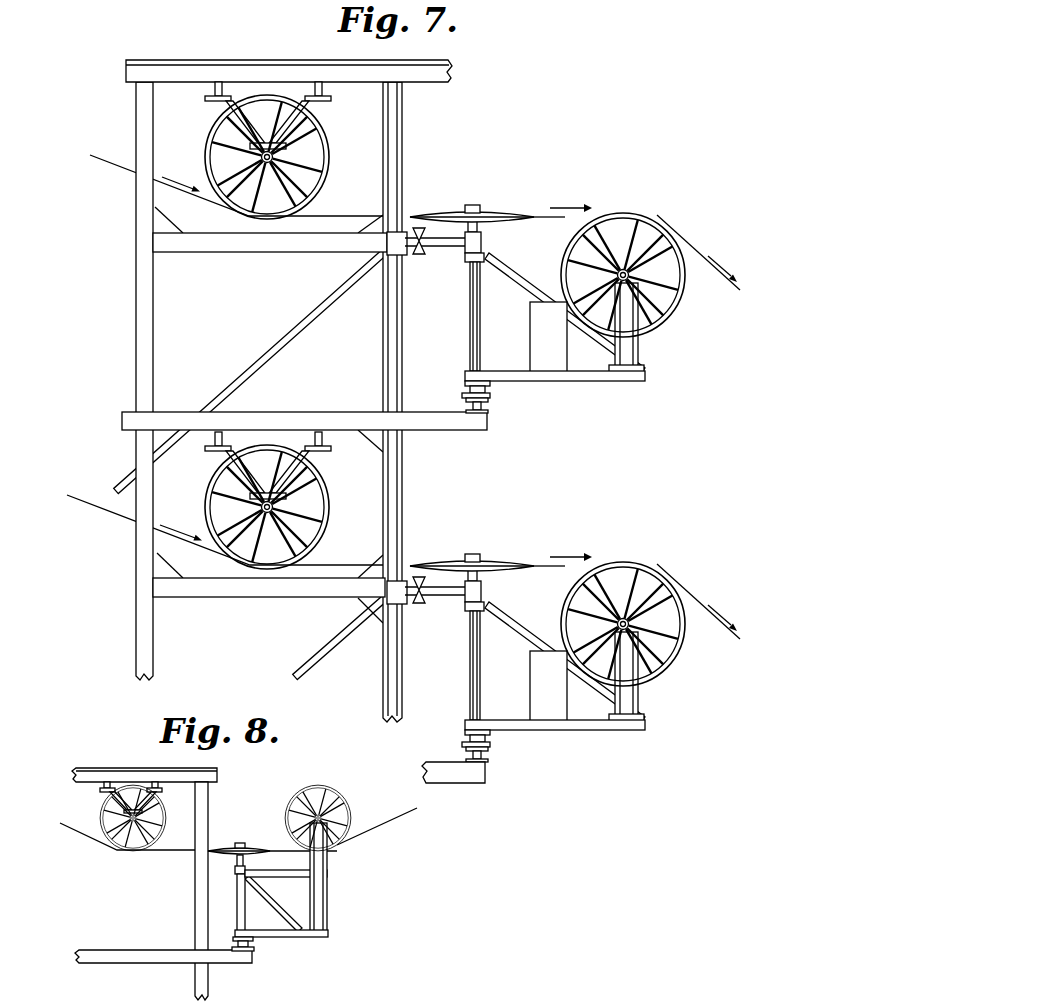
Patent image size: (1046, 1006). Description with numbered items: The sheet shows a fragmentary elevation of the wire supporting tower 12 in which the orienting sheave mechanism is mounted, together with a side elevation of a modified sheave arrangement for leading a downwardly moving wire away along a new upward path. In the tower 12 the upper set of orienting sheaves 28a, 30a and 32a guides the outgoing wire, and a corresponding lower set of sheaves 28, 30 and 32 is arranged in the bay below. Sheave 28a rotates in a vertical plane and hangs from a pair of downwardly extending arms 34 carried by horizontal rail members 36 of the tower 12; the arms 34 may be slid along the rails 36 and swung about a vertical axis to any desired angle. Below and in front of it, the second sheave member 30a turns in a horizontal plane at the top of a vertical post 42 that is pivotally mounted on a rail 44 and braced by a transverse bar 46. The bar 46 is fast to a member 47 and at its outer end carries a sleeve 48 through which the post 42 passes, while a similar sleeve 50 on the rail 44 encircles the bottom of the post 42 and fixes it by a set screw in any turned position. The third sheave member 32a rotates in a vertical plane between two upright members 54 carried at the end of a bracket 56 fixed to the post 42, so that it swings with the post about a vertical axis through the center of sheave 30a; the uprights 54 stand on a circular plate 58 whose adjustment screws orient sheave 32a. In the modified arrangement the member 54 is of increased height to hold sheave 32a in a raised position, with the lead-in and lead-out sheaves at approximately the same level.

In FIG. 7, the tower 12 is at (136, 343).
In FIG. 7, the guide wheel 28 is at (327, 518).
In FIG. 7, the orienting sheave 28a is at (329, 164).
In FIG. 8, the orienting sheave 28a is at (114, 852).
In FIG. 7, the pulley 30 is at (474, 551).
In FIG. 7, the second sheave member 30a is at (522, 200).
In FIG. 8, the second sheave member 30a is at (220, 846).
In FIG. 7, the wheel 32 is at (626, 613).
In FIG. 7, the third sheave member 32a is at (658, 216).
In FIG. 8, the third sheave member 32a is at (345, 805).
In FIG. 7, the downwardly extending arms 34 is at (293, 117).
In FIG. 7, the horizontal rail members 36 is at (319, 82).
In FIG. 7, the vertical post 42 is at (470, 310).
In FIG. 7, the rail 44 is at (489, 407).
In FIG. 7, the transverse bar 46 is at (437, 248).
In FIG. 7, the member 47 is at (396, 236).
In FIG. 7, the sleeve 48 is at (481, 241).
In FIG. 7, the sleeve 50 is at (488, 386).
In FIG. 7, the upright members 54 is at (639, 345).
In FIG. 8, the upright members 54 is at (320, 888).
In FIG. 7, the bracket 56 is at (582, 374).
In FIG. 7, the circular plate 58 is at (641, 370).